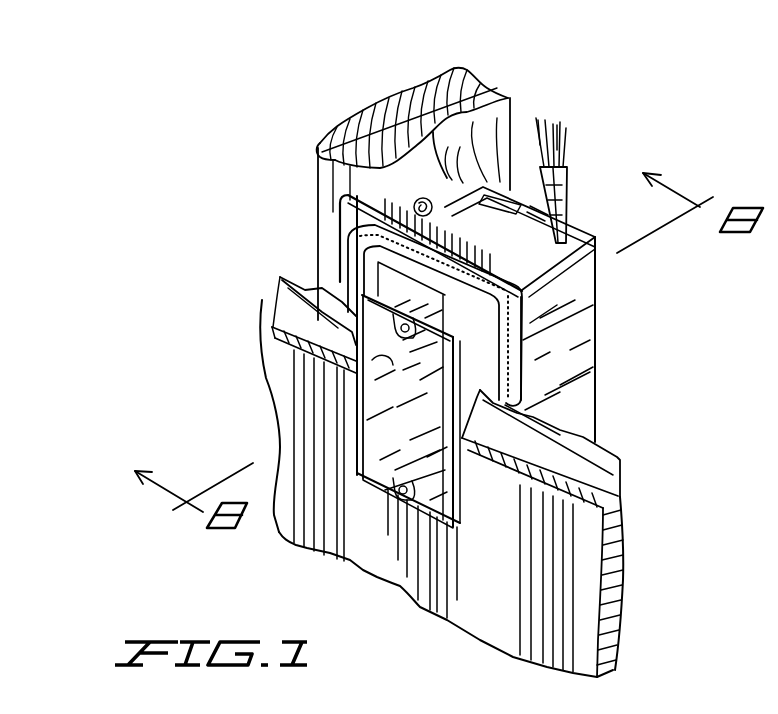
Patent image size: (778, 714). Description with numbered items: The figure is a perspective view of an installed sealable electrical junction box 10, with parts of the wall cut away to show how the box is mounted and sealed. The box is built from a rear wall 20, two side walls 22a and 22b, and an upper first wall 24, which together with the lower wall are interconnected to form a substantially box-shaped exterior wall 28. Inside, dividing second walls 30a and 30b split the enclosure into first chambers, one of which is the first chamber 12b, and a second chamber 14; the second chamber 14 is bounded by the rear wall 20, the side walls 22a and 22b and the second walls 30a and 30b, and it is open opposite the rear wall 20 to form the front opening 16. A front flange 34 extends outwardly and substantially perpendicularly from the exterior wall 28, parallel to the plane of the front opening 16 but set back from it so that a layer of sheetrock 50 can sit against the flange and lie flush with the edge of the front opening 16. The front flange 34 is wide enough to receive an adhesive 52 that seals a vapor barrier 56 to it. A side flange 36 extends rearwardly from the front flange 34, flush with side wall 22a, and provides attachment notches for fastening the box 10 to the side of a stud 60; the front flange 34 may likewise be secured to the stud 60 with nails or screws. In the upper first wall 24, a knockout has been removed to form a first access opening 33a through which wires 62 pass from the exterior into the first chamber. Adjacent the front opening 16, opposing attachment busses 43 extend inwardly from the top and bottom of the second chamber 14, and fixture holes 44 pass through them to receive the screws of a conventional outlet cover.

The sealable electrical junction box 10 is at (350, 328).
The first chamber 12b is at (521, 377).
The second chamber 14 is at (405, 453).
The front opening 16 is at (383, 432).
The rear wall 20 is at (598, 347).
The side wall 22a is at (358, 366).
The side wall 22b is at (560, 377).
The upper first wall 24 is at (528, 258).
The exterior wall 28 is at (458, 232).
The second wall 30a is at (405, 520).
The second wall 30b is at (383, 287).
The first access opening 33a is at (570, 226).
The front flange 34 is at (519, 334).
The side flange 36 is at (433, 138).
The attachment buss 43 is at (370, 505).
The fixture hole 44 is at (397, 502).
The sheetrock 50 is at (502, 594).
The adhesive 52 is at (368, 225).
The vapor barrier 56 is at (623, 477).
The stud 60 is at (508, 98).
The wires 62 is at (563, 170).